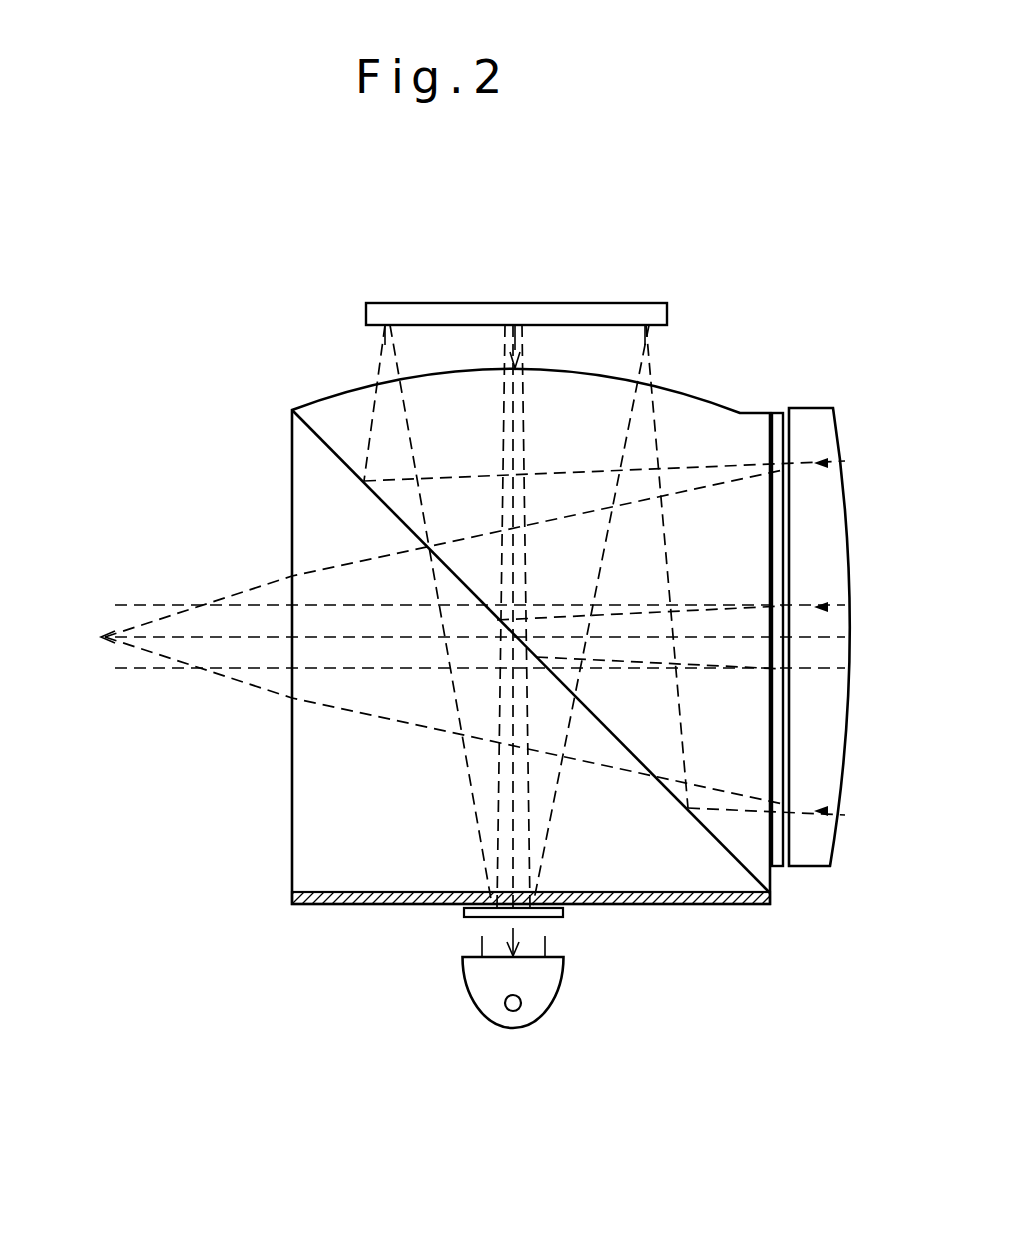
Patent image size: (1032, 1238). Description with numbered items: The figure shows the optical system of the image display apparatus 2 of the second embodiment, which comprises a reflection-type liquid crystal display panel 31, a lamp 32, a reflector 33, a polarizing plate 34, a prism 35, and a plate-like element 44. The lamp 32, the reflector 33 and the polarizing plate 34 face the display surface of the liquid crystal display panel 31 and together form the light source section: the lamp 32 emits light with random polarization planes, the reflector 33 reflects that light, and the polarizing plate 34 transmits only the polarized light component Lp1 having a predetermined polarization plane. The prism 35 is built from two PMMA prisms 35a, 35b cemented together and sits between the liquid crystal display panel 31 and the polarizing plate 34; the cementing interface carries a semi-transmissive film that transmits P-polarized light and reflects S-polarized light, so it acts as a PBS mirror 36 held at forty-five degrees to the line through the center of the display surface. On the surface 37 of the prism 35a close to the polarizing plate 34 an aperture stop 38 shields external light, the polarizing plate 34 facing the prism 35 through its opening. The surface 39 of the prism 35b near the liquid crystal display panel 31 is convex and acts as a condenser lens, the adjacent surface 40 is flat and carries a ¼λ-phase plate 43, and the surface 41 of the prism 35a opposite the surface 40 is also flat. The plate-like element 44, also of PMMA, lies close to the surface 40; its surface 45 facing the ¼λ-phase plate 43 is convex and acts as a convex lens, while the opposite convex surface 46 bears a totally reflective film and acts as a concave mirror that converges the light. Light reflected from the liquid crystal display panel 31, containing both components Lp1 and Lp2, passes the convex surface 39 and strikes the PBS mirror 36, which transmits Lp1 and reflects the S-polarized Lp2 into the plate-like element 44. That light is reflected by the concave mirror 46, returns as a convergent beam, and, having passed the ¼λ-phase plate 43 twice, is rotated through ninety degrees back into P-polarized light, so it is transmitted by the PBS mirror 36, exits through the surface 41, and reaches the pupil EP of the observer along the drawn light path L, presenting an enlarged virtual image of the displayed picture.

The image display apparatus 2 is at (322, 1069).
The reflection-type liquid crystal display panel 31 is at (585, 302).
The lamp 32 is at (507, 1011).
The reflector 33 is at (465, 990).
The polarizing plate 34 is at (470, 919).
The prism 35 is at (268, 424).
The prism 35a is at (306, 843).
The prism 35b is at (330, 408).
The PBS mirror 36 is at (732, 860).
The surface 37 is at (556, 918).
The aperture stop 38 is at (678, 906).
The surface 39 is at (678, 384).
The surface 40 is at (769, 447).
The surface 41 is at (292, 460).
The ¼λ-phase plate 43 is at (779, 412).
The plate-like element 44 is at (830, 436).
The surface 45 is at (790, 748).
The surface 46 is at (848, 681).
The object light L is at (117, 669).
The pupil EP is at (100, 673).
The polarized light component Lp1 is at (493, 455).
The polarized light component Lp2 is at (732, 454).